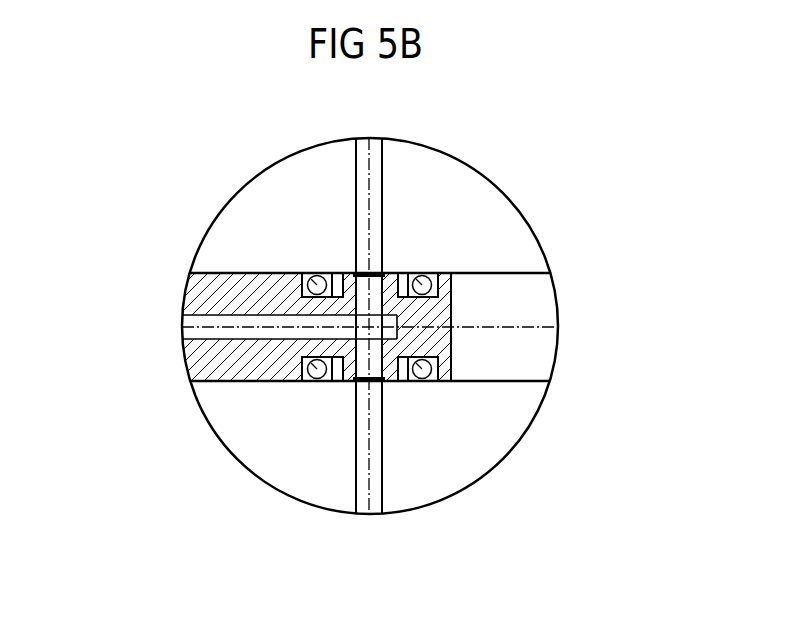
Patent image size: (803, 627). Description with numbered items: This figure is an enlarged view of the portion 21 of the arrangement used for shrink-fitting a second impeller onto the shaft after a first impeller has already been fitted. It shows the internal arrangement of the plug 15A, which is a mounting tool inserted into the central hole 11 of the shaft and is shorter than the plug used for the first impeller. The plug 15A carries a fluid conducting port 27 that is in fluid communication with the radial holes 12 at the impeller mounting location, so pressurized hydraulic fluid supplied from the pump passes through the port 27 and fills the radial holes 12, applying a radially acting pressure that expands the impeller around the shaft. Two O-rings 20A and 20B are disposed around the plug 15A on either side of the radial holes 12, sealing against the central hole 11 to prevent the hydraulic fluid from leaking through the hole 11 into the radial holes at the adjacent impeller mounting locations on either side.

The central hole 11 is at (513, 273).
The radial holes 12 is at (370, 183).
The plug 15A is at (215, 355).
The O-ring 20A is at (300, 272).
The O-ring 20B is at (445, 273).
The portion 21 is at (540, 192).
The fluid conducting port 27 is at (187, 308).